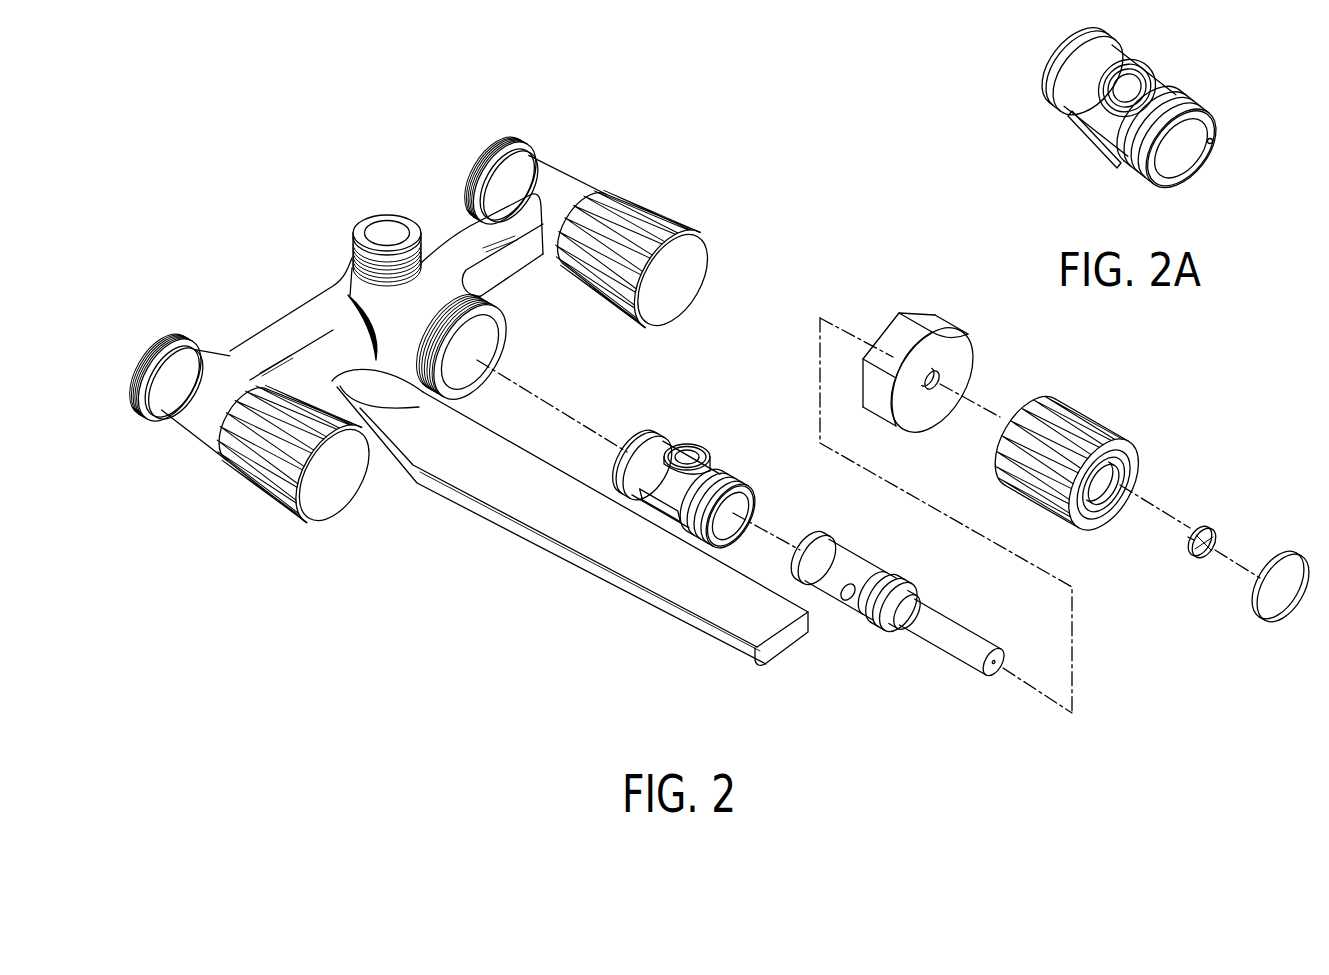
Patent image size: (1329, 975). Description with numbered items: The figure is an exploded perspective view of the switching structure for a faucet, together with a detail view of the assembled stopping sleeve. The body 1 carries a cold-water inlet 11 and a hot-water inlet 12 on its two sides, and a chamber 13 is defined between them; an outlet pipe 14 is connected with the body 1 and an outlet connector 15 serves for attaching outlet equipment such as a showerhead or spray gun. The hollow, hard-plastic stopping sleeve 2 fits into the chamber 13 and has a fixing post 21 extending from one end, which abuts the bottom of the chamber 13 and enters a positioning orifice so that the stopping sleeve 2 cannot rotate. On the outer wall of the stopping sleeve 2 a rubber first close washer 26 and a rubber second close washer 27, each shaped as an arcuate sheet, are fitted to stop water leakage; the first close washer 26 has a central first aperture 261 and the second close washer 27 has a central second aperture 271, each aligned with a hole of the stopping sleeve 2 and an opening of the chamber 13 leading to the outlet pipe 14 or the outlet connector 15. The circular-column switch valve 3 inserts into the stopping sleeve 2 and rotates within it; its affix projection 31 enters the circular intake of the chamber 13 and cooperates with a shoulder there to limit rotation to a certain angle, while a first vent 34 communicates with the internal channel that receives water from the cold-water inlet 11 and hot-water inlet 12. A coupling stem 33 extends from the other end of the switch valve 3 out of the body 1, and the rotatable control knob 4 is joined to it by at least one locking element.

In FIG. 2, the body 1 is at (460, 392).
In FIG. 2, the cold-water inlet 11 is at (482, 153).
In FIG. 2, the hot-water inlet 12 is at (145, 350).
In FIG. 2, the chamber 13 is at (455, 378).
In FIG. 2, the outlet pipe 14 is at (667, 608).
In FIG. 2, the outlet connector 15 is at (375, 230).
In FIG. 2, the stopping sleeve 2 is at (611, 461).
In FIG. 2, the first close washer 26 is at (650, 507).
In FIG. 2A, the first close washer 26 is at (1105, 128).
In FIG. 2, the second close washer 27 is at (710, 405).
In FIG. 2, the second aperture 271 is at (688, 450).
In FIG. 2, the switch valve 3 is at (895, 610).
In FIG. 2, the affix projection 31 is at (856, 589).
In FIG. 2, the coupling stem 33 is at (953, 652).
In FIG. 2, the first vent 34 is at (845, 603).
In FIG. 2, the rotatable control knob 4 is at (1152, 468).
In FIG. 2A, the first aperture 261 is at (1123, 90).
In FIG. 2A, the fixing post 21 is at (1213, 144).